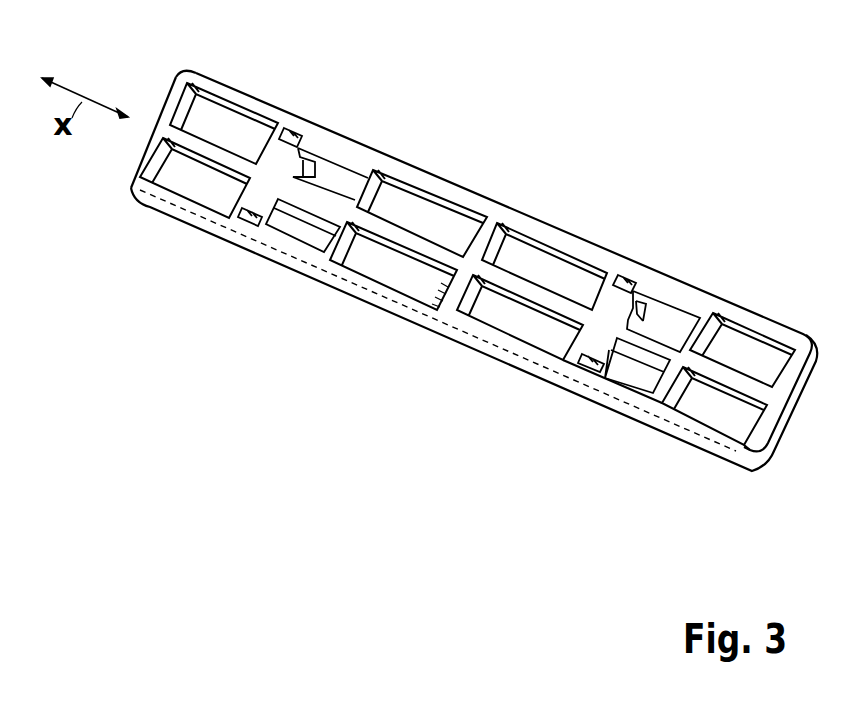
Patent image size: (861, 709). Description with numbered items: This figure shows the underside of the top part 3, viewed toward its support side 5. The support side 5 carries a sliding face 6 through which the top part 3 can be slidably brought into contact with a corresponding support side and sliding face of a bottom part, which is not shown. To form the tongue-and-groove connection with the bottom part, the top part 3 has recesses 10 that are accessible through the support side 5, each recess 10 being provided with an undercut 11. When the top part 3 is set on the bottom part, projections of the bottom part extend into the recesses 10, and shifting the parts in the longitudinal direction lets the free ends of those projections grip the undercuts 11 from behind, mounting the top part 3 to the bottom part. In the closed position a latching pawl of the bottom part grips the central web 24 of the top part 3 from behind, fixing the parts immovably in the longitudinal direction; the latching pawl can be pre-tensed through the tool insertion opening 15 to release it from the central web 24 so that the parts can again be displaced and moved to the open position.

The top part 3 is at (486, 78).
The support side 5 is at (280, 108).
The sliding face 6 is at (373, 160).
The recess 10 is at (330, 173).
The undercut 11 is at (302, 140).
The tool insertion opening 15 is at (432, 312).
The central web 24 is at (490, 227).